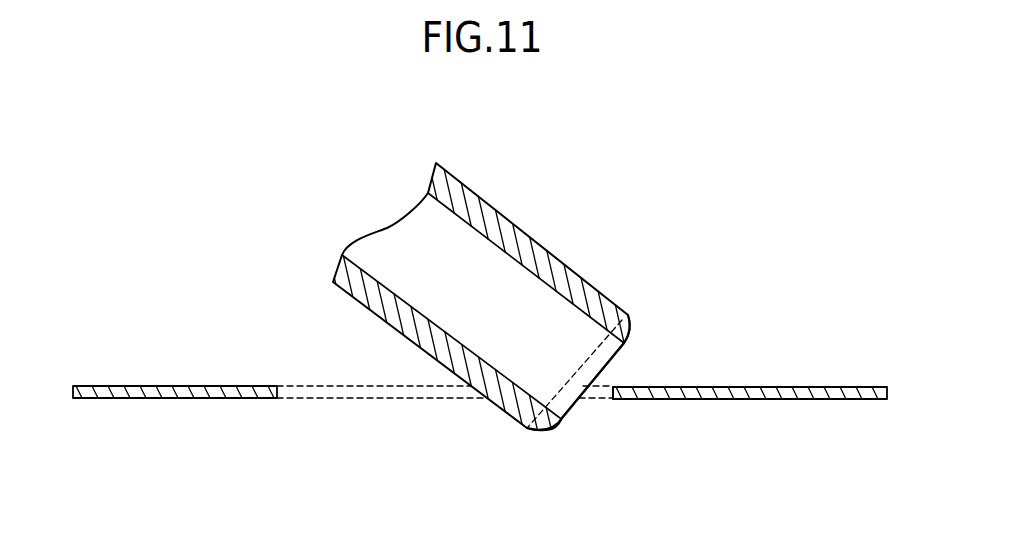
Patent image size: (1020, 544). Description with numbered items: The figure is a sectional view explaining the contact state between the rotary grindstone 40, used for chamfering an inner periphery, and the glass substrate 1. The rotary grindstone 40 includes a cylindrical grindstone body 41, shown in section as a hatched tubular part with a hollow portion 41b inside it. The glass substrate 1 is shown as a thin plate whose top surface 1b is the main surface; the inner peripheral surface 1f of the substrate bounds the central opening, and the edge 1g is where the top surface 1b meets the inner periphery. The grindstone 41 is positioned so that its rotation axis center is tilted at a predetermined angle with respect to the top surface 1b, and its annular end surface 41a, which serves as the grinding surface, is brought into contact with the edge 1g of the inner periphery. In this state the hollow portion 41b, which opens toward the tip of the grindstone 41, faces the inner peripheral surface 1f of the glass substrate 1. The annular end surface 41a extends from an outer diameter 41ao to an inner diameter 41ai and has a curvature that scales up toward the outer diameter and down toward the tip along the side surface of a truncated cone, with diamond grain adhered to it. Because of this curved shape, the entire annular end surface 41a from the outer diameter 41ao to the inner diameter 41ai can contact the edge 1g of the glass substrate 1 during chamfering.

The glass substrate 1 is at (480, 384).
The inner peripheral surface 1f is at (277, 387).
The top surface 1b is at (800, 387).
The edge 1g is at (614, 387).
The rotary grindstone 40 is at (510, 138).
The grindstone body 41 is at (528, 237).
The annular end surface 41a is at (632, 332).
The inner diameter 41ai is at (559, 420).
The outer diameter 41ao is at (523, 430).
The hollow portion 41b is at (585, 380).